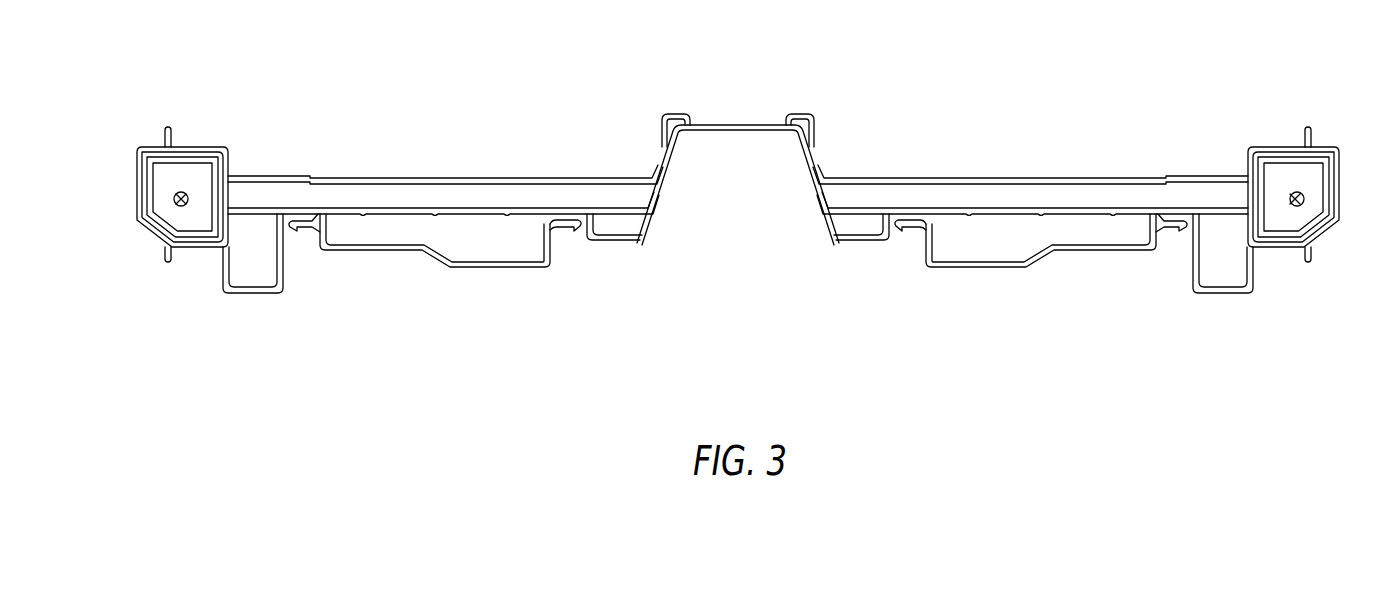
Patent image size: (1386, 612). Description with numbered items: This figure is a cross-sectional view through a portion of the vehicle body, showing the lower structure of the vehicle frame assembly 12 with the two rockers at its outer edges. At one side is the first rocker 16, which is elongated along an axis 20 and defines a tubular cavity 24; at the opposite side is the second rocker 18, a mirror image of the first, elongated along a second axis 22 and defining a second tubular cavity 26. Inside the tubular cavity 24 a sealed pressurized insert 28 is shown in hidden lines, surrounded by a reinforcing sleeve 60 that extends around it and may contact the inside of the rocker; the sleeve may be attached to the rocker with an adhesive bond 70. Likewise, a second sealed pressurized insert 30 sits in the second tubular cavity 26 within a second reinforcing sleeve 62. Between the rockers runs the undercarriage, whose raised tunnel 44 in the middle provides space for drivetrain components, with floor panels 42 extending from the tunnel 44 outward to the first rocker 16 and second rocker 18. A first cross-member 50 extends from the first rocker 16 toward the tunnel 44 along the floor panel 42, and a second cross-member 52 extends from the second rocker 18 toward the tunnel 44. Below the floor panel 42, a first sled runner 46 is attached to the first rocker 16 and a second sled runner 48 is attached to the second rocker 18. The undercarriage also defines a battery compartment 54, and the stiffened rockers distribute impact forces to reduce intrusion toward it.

The vehicle frame assembly 12 is at (860, 75).
The first rocker 16 is at (1343, 173).
The second rocker 18 is at (136, 173).
The axis 20 is at (1297, 192).
The second axis 22 is at (181, 192).
The tubular cavity 24 is at (1330, 148).
The second tubular cavity 26 is at (147, 150).
The sealed pressurized insert 28 is at (1297, 250).
The second sealed pressurized insert 30 is at (182, 250).
The floor panel 42 is at (410, 207).
The tunnel 44 is at (815, 150).
The first sled runner 46 is at (1230, 298).
The second sled runner 48 is at (248, 297).
The first cross-member 50 is at (1150, 176).
The second cross-member 52 is at (330, 176).
The battery compartment 54 is at (1040, 267).
The reinforcing sleeve 60 is at (1315, 250).
The second reinforcing sleeve 62 is at (165, 245).
The adhesive bond 70 is at (140, 205).